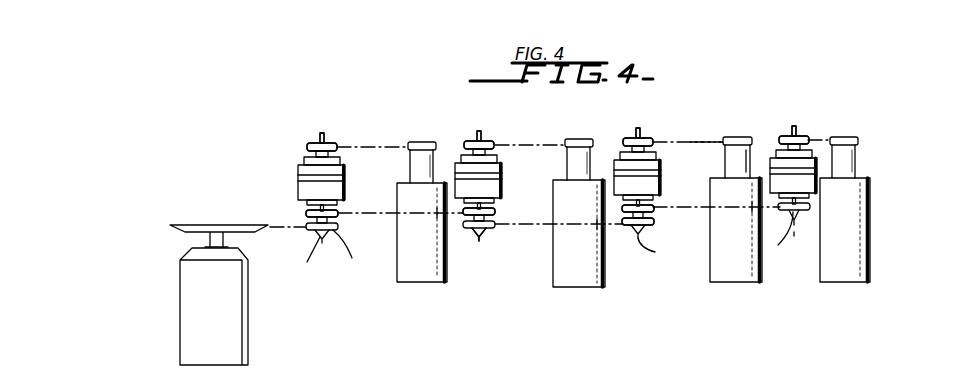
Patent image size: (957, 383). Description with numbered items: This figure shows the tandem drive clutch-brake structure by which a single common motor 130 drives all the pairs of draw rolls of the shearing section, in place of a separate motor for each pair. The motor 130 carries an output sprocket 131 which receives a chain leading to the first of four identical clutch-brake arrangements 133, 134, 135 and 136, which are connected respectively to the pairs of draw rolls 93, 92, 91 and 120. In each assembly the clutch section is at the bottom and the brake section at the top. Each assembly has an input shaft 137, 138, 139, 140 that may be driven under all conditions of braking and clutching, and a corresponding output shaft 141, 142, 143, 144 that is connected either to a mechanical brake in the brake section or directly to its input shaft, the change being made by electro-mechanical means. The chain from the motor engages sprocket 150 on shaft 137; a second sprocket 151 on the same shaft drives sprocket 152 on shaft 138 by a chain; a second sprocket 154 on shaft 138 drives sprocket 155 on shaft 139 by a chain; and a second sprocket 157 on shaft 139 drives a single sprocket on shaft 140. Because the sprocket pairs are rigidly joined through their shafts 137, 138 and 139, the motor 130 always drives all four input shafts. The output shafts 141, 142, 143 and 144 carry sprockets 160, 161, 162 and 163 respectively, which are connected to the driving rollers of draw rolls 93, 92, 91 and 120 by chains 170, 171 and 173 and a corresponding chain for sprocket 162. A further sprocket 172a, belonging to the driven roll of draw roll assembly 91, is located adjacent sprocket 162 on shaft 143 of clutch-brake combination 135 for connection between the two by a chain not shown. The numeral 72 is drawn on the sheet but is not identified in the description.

The line 72 is at (704, 142).
The pair of draw rolls 91 is at (764, 280).
The pair of draw rolls 92 is at (607, 280).
The pair of draw rolls 93 is at (449, 280).
The pair of draw rolls 120 is at (867, 262).
The motor 130 is at (248, 343).
The output sprocket 131 is at (243, 208).
The clutch-brake arrangement 133 is at (298, 170).
The clutch-brake arrangement 134 is at (505, 178).
The clutch-brake arrangement 135 is at (663, 175).
The clutch-brake arrangement 136 is at (807, 167).
The input shaft 137 is at (306, 260).
The input shaft 138 is at (488, 232).
The input shaft 139 is at (661, 253).
The input shaft 140 is at (783, 239).
The output shaft 141 is at (323, 133).
The output shaft 142 is at (479, 131).
The output shaft 143 is at (638, 128).
The output shaft 144 is at (797, 126).
The sprocket 150 is at (357, 251).
The second sprocket 151 is at (339, 213).
The sprocket 152 is at (494, 216).
The second sprocket 154 is at (476, 230).
The sprocket 155 is at (655, 225).
The second sprocket 157 is at (654, 208).
The sprocket 160 is at (335, 146).
The sprocket 161 is at (491, 144).
The sprocket 162 is at (651, 141).
The sprocket 163 is at (801, 138).
The chain 170 is at (384, 148).
The chain 171 is at (541, 145).
The sprocket 172a is at (747, 138).
The chain 173 is at (848, 137).